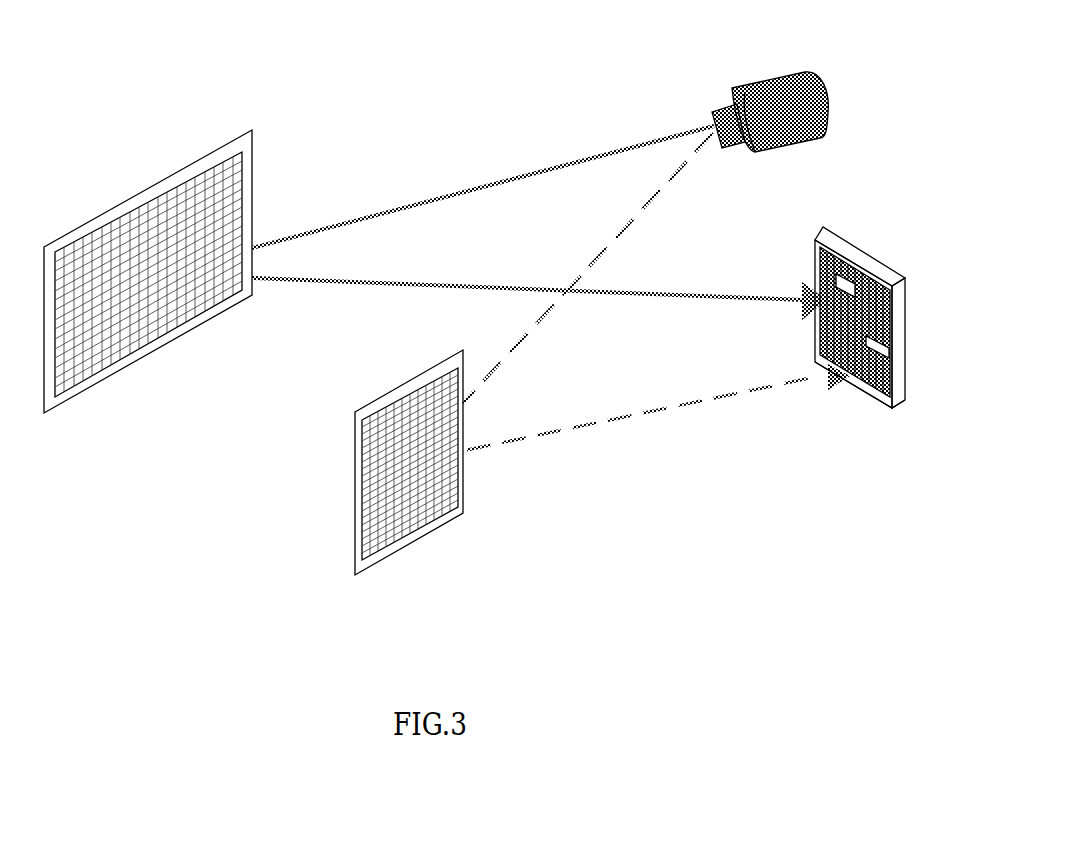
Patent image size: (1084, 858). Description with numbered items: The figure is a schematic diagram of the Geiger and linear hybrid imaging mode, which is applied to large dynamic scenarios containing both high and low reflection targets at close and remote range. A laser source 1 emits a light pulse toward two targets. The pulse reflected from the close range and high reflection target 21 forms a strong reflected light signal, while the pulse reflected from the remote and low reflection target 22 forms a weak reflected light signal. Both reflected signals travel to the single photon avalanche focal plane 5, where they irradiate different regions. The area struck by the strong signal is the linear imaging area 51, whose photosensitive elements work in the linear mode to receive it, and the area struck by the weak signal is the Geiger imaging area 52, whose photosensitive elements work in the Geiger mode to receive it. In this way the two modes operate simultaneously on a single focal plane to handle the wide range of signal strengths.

The laser source 1 is at (767, 78).
The close range and high reflection target 21 is at (415, 537).
The remote and low reflection target 22 is at (160, 348).
The single photon avalanche focal plane 5 is at (872, 347).
The linear imaging area 51 is at (850, 270).
The Geiger imaging area 52 is at (880, 397).